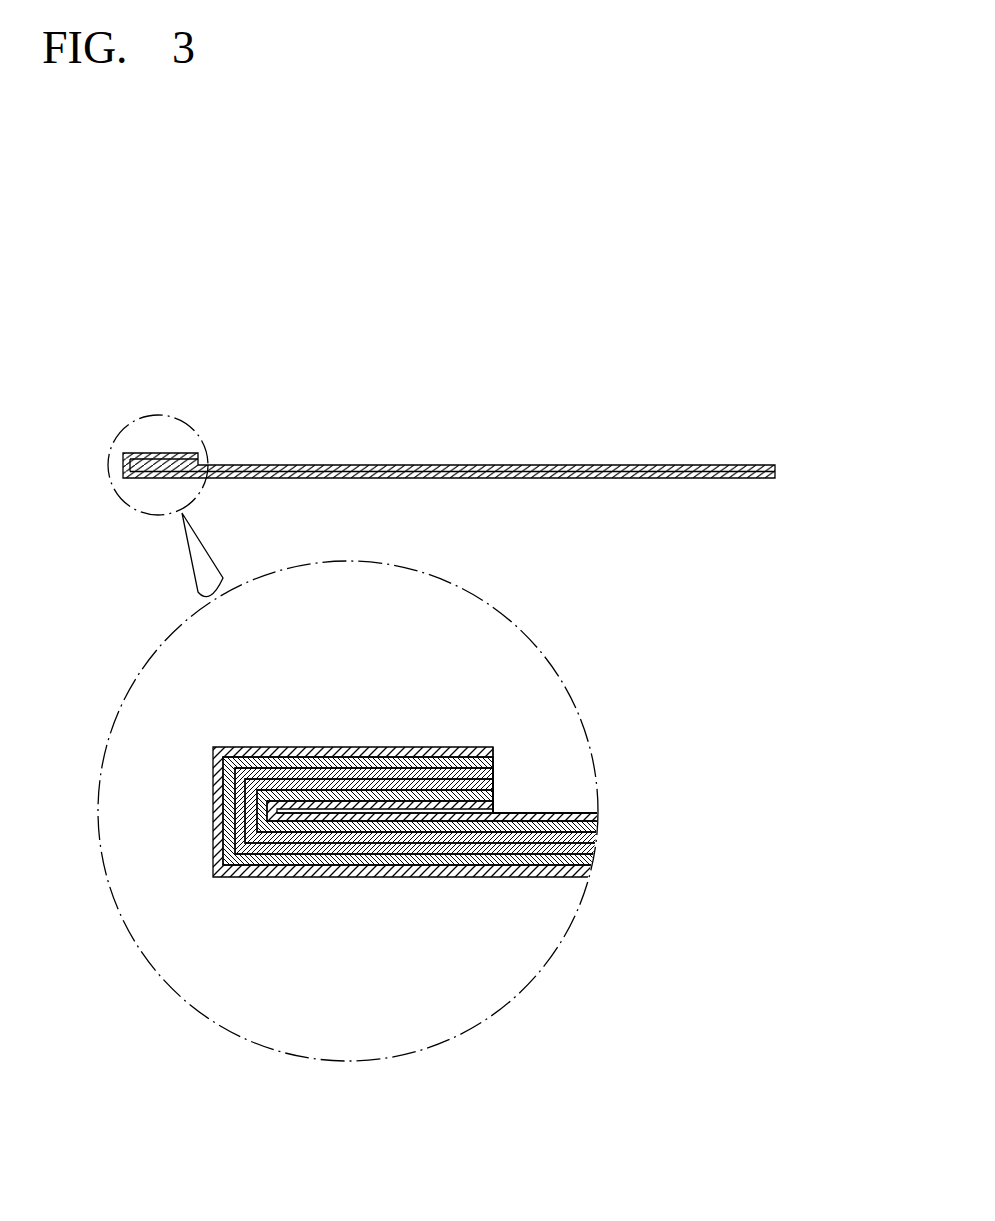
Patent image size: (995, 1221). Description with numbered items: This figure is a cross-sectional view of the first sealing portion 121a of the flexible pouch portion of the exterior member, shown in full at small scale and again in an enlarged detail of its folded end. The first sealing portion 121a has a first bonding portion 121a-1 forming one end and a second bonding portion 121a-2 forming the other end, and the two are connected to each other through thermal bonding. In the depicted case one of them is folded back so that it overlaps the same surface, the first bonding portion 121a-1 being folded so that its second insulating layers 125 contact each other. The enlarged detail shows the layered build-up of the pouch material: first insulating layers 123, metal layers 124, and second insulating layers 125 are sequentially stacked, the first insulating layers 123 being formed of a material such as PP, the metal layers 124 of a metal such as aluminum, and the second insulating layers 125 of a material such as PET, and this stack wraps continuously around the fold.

The first sealing portion 121a is at (475, 452).
The first bonding portion 121a-1 is at (509, 799).
The second bonding portion 121a-2 is at (497, 745).
The first insulating layers 123 is at (495, 783).
The metal layers 124 is at (347, 792).
The second insulating layers 125 is at (437, 808).